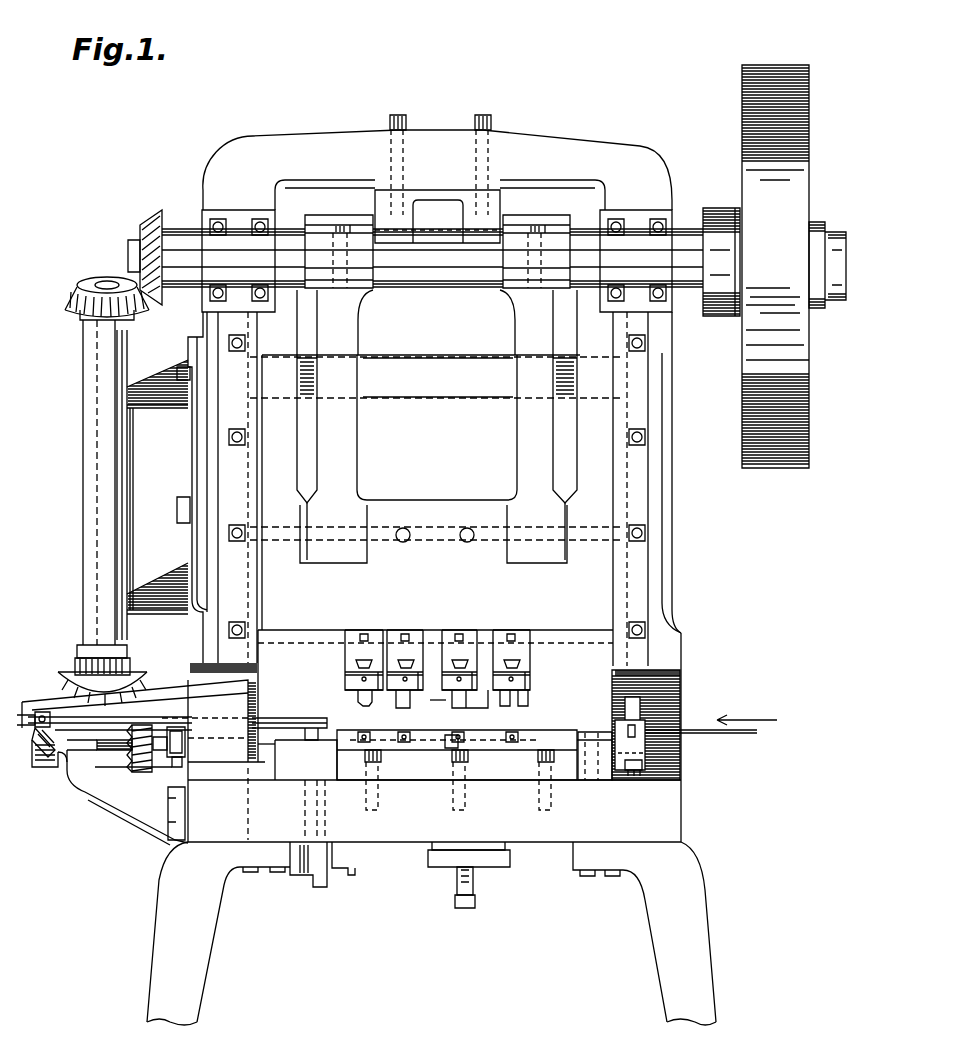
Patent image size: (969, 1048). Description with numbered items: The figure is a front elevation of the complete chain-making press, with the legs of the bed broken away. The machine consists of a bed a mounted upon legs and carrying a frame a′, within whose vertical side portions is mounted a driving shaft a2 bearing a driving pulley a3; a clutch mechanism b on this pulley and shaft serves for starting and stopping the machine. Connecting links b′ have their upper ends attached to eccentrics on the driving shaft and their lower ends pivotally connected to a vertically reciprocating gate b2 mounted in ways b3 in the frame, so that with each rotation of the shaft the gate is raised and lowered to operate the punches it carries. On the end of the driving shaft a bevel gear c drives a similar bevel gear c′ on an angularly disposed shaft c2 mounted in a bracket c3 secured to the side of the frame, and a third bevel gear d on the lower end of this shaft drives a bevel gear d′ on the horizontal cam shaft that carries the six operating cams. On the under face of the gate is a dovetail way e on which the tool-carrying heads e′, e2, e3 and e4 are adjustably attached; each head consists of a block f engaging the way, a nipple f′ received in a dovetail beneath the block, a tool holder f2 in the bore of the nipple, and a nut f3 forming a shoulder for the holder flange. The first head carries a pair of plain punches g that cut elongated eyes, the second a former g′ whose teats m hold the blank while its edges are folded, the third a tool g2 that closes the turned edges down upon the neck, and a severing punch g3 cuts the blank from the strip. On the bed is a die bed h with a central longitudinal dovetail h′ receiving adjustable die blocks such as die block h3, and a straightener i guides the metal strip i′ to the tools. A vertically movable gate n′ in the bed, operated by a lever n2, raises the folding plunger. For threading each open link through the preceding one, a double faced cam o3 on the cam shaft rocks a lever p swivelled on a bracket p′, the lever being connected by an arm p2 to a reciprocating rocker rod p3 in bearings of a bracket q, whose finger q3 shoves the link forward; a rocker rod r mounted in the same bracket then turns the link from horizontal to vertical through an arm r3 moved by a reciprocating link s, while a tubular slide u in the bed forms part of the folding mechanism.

The bed a is at (391, 668).
The frame a′ is at (202, 483).
The driving shaft a2 is at (453, 288).
The driving pulley a3 is at (775, 266).
The clutch mechanism b is at (688, 295).
The connecting links b′ is at (355, 455).
The vertically reciprocating gate b2 is at (435, 442).
The ways b3 is at (247, 607).
The bevel gear c is at (152, 226).
The bevel gear c′ is at (92, 278).
The angularly disposed shaft c2 is at (97, 519).
The bracket c3 is at (152, 582).
The bevel gear d is at (75, 662).
The bevel gear d′ is at (147, 765).
The dovetail way e is at (435, 696).
The first tool-carrying head e′ is at (518, 630).
The tool-carrying head e2 is at (452, 630).
The tool-carrying head e3 is at (400, 630).
The tool-carrying head e4 is at (354, 629).
The block f is at (346, 648).
The nipple f′ is at (346, 670).
The tool holder f2 is at (550, 695).
The nut f3 is at (441, 680).
The plain punches g is at (512, 706).
The former g′ is at (470, 704).
The tool g2 is at (402, 708).
The severing punch g3 is at (368, 704).
The teats m is at (438, 705).
The die bed h is at (457, 770).
The central longitudinal dovetail h′ is at (568, 735).
The die block h3 is at (447, 717).
The straightener i is at (640, 715).
The metal strip i′ is at (690, 738).
The lever p is at (56, 755).
The bracket p′ is at (122, 803).
The arm p2 is at (40, 711).
The reciprocating rocker rod p3 is at (115, 718).
The bracket q is at (143, 721).
The finger q3 is at (323, 720).
The rocker rod r is at (297, 760).
The arm r3 is at (185, 740).
The double faced cam o3 is at (99, 757).
The reciprocating link s is at (180, 766).
The tubular slide u is at (305, 870).
The vertically movable gate n′ is at (446, 862).
The lever n2 is at (476, 878).